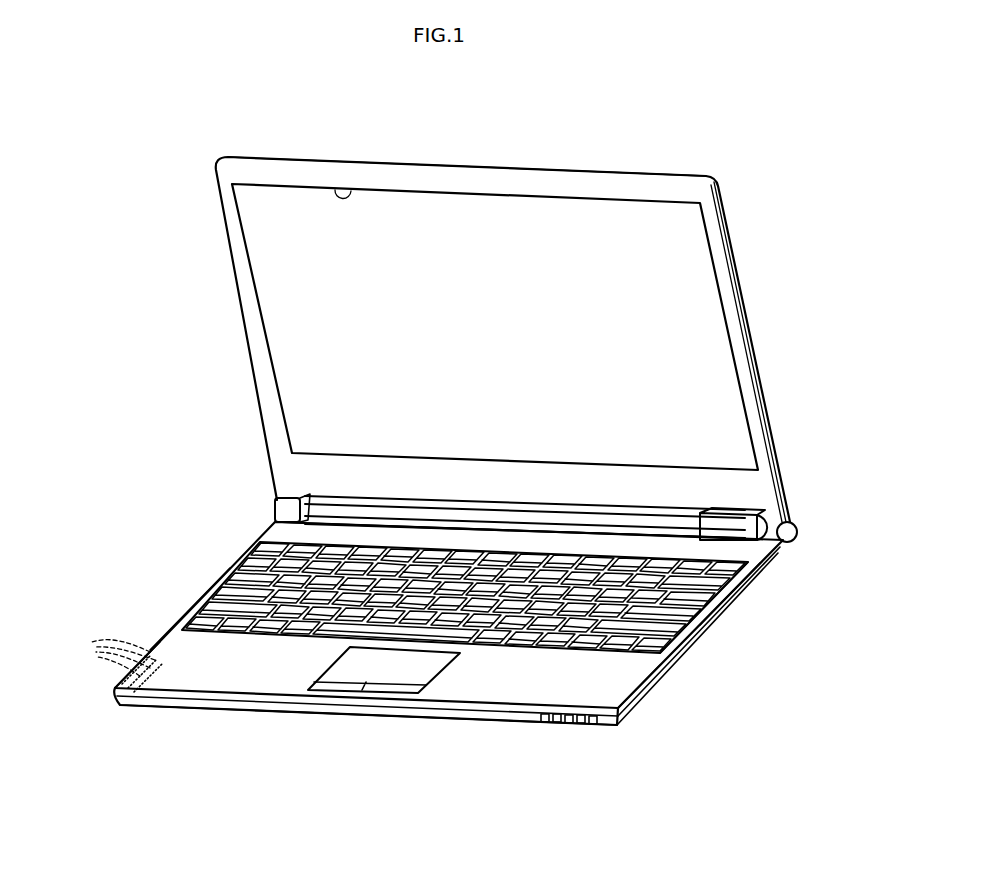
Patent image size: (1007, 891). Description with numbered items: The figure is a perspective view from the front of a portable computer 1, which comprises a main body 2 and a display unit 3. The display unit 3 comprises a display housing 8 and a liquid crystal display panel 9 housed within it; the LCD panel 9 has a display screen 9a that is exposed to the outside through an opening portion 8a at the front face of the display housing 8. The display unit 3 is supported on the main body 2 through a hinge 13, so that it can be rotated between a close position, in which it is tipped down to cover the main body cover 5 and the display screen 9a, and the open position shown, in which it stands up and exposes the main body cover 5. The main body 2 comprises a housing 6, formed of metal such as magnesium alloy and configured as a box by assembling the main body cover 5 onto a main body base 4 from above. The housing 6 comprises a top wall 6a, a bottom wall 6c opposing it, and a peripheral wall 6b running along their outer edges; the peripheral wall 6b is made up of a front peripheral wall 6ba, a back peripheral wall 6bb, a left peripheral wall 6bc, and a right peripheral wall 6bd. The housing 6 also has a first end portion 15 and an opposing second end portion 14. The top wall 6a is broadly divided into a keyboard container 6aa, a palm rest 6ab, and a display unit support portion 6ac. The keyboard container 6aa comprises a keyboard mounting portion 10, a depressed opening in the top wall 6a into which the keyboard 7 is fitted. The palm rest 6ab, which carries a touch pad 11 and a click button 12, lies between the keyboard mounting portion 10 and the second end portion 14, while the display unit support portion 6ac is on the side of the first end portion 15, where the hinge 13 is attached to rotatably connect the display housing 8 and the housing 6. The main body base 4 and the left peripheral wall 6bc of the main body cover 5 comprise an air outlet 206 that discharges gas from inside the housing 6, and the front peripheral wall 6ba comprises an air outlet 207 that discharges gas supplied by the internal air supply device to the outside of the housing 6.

The portable computer 1 is at (484, 130).
The main body 2 is at (170, 653).
The display unit 3 is at (237, 262).
The main body base 4 is at (762, 577).
The main body cover 5 is at (763, 528).
The housing 6 is at (746, 582).
The top wall 6a is at (632, 706).
The keyboard container 6aa is at (725, 610).
The palm rest 6ab is at (635, 662).
The display unit support portion 6ac is at (327, 537).
The peripheral wall 6b is at (510, 712).
The front peripheral wall 6ba is at (218, 712).
The left peripheral wall 6bc is at (200, 598).
The right peripheral wall 6bd is at (707, 608).
The back peripheral wall 6bb is at (714, 530).
The bottom wall 6c is at (312, 718).
The keyboard 7 is at (512, 580).
The display housing 8 is at (565, 186).
The opening portion 8a is at (345, 191).
The liquid crystal display (LCD) panel 9 is at (690, 252).
The display screen 9a is at (562, 328).
The keyboard mounting portion 10 is at (687, 630).
The touch pad 11 is at (425, 656).
The click button 12 is at (365, 690).
The hinge 13 is at (286, 506).
The second end portion 14 is at (160, 700).
The first end portion 15 is at (362, 500).
The air outlet 206 is at (84, 638).
The air outlet 207 is at (545, 723).